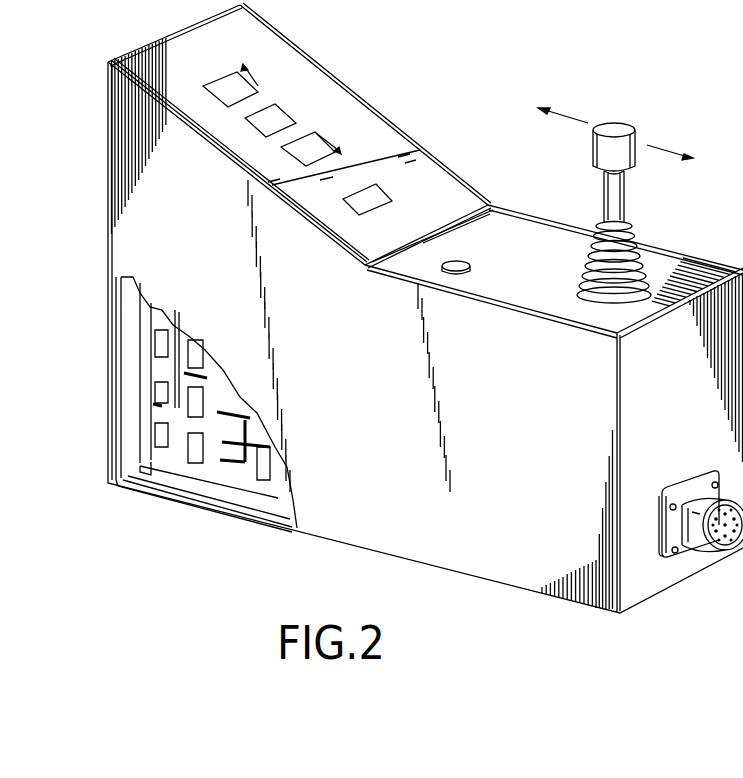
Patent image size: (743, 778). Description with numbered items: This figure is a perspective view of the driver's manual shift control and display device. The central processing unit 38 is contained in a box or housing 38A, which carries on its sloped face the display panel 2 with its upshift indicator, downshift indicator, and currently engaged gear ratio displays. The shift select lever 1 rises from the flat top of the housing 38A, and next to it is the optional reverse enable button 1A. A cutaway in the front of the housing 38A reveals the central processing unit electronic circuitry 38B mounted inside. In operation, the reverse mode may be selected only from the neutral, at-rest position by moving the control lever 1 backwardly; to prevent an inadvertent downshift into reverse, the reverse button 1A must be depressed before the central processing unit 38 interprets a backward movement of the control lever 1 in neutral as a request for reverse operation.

The shift select lever 1 is at (620, 122).
The reverse enable button 1A is at (470, 277).
The display panel 2 is at (303, 78).
The central processing unit 38 is at (133, 339).
The housing 38A is at (367, 527).
The central processing unit electronic circuitry 38B is at (157, 392).